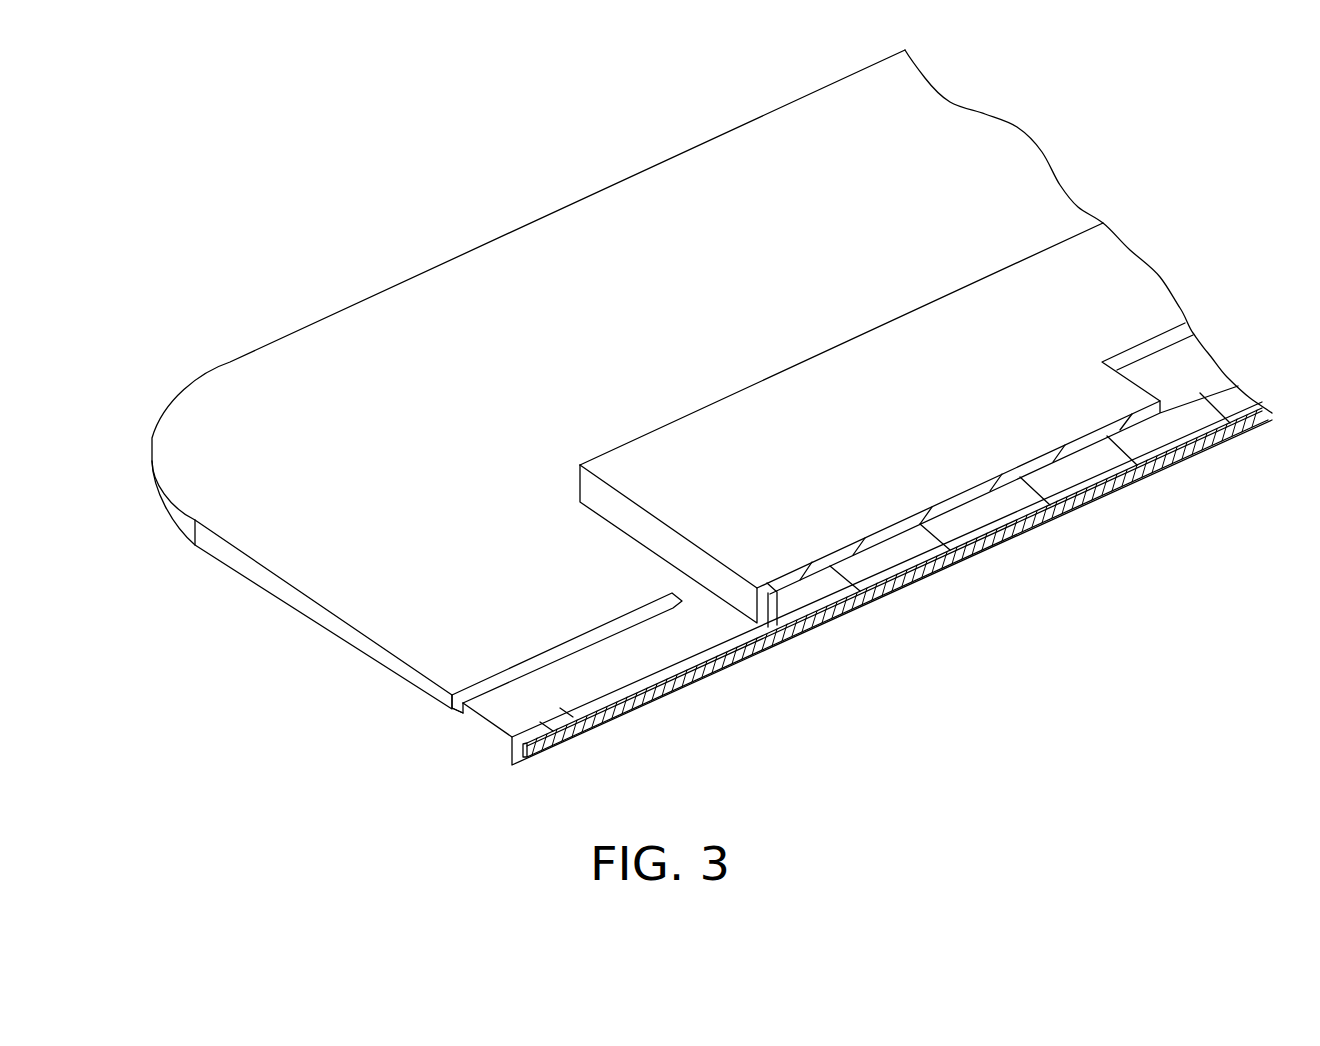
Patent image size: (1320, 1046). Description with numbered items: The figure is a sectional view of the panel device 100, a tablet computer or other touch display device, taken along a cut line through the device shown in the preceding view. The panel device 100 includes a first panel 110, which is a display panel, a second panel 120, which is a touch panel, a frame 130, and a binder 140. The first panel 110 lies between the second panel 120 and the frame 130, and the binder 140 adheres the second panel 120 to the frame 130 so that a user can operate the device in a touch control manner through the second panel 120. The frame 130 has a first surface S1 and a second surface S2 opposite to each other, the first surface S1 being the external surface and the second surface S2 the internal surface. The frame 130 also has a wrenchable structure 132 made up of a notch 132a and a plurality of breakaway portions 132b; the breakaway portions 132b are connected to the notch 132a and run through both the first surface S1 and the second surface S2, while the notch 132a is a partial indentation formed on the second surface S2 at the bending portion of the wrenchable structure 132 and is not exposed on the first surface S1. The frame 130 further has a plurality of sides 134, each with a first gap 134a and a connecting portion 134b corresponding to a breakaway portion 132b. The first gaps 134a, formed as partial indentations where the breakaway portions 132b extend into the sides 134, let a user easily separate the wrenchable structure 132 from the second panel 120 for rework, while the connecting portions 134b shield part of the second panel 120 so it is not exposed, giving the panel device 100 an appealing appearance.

The panel device 100 is at (423, 176).
The first panel 110 is at (895, 578).
The second panel 120 is at (840, 620).
The frame 130 is at (312, 558).
The wrenchable structure 132 is at (842, 762).
The notch 132a is at (743, 652).
The breakaway portions 132b is at (728, 642).
The sides 134 is at (497, 742).
The first gap 134a is at (470, 716).
The connecting portion 134b is at (462, 716).
The binder 140 is at (653, 622).
The first surface S1 is at (579, 684).
The second surface S2 is at (551, 742).